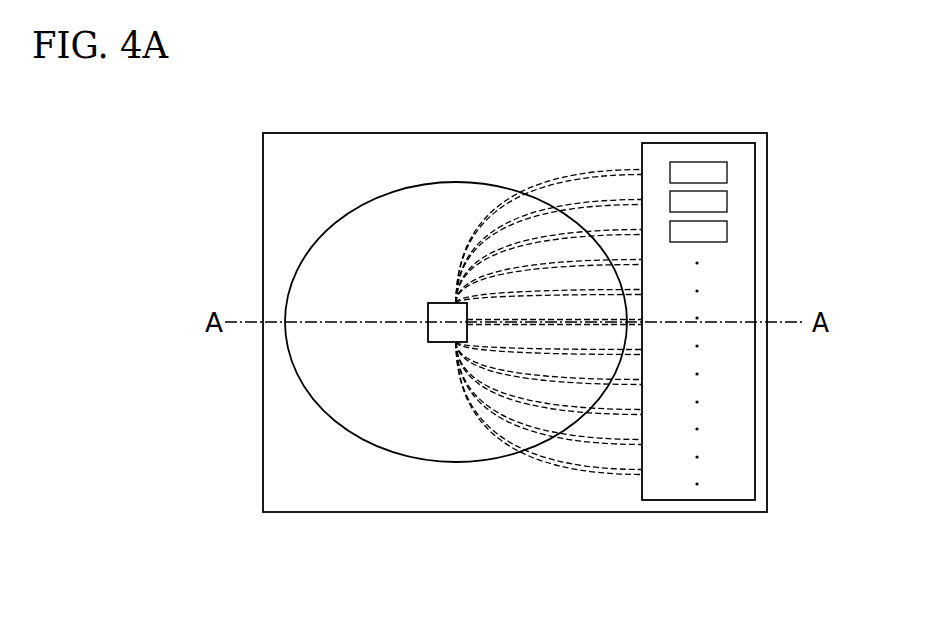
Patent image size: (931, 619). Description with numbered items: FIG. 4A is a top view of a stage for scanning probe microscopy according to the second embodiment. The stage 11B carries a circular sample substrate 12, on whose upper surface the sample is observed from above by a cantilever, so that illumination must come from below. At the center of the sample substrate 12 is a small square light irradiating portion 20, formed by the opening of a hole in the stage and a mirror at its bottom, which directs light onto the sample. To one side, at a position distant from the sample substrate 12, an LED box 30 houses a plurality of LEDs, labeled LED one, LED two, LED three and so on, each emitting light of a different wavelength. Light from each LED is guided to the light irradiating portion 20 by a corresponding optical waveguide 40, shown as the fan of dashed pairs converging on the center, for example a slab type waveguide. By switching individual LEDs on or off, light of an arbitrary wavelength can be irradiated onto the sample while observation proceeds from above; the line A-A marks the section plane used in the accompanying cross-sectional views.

The stage body 11B is at (290, 512).
The sample substrate 12 is at (383, 263).
The light irradiating portion 20 is at (445, 330).
The LED box 30 is at (696, 143).
The optical waveguide 40 is at (565, 473).